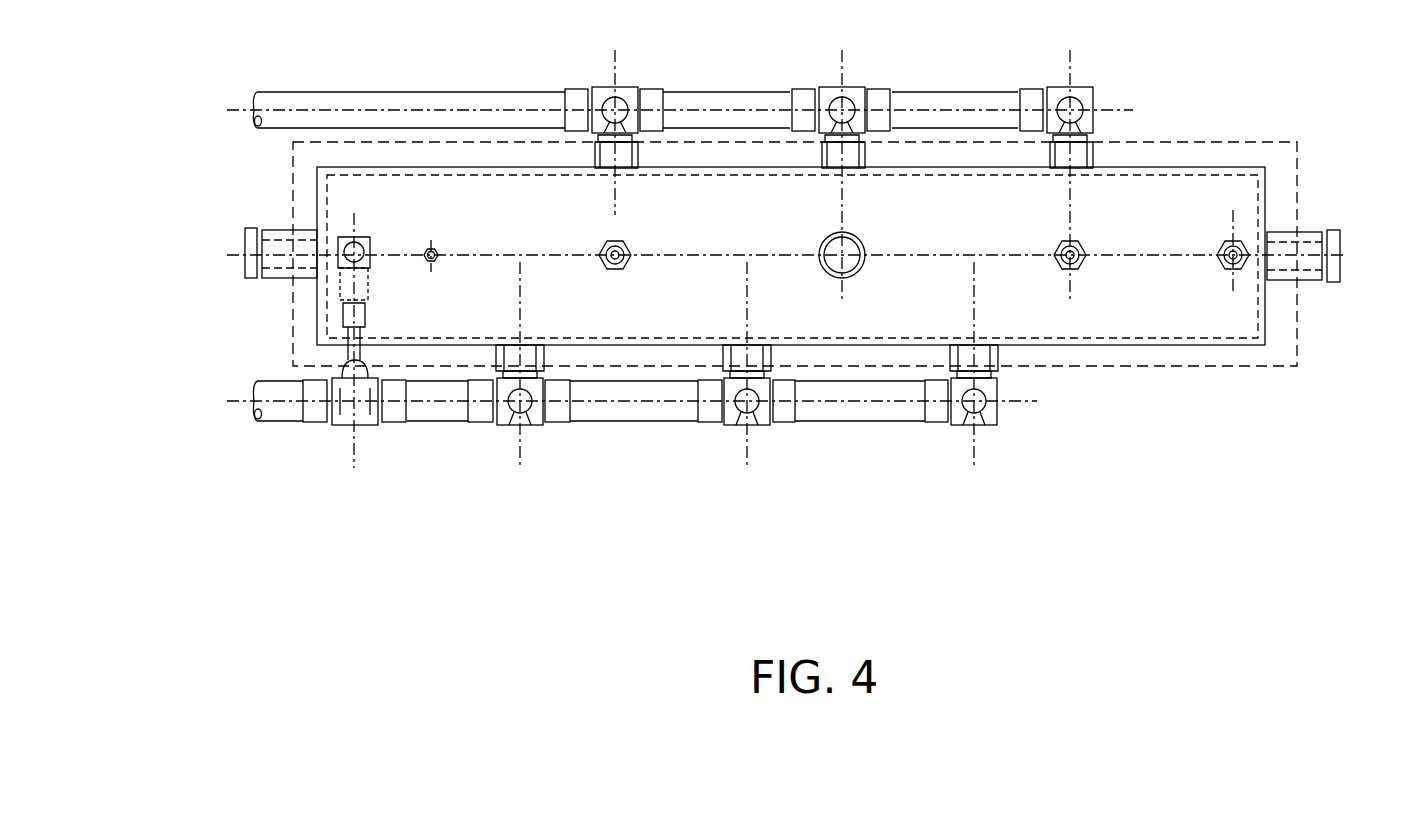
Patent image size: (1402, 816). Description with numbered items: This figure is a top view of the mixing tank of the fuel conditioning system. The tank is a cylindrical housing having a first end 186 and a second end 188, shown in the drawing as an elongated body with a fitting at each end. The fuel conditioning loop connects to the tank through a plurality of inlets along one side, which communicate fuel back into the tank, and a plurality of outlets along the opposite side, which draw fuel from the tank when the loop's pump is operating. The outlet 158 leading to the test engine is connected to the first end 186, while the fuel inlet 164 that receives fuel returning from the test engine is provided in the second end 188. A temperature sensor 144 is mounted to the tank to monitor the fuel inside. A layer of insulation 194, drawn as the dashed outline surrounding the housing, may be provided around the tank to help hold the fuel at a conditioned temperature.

The temperature sensor 144 is at (1078, 268).
The outlet 158 is at (1293, 232).
The fuel inlet 164 is at (293, 277).
The first end 186 is at (1355, 320).
The second end 188 is at (183, 152).
The layer of insulation 194 is at (383, 152).